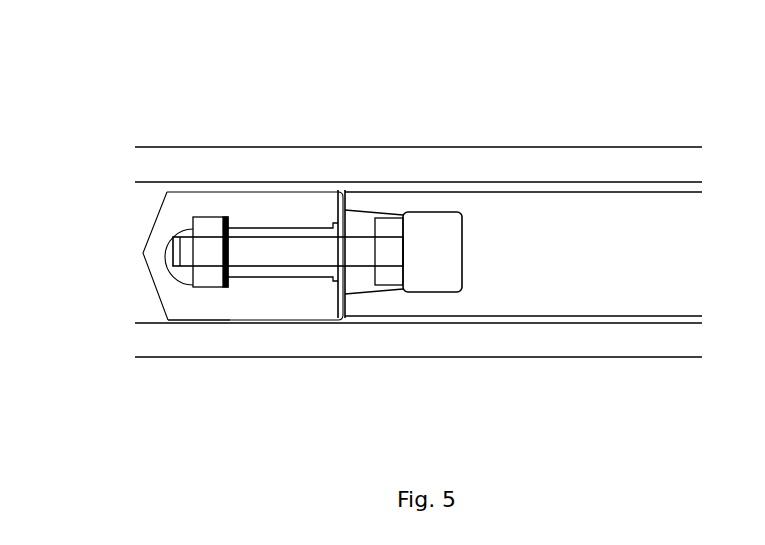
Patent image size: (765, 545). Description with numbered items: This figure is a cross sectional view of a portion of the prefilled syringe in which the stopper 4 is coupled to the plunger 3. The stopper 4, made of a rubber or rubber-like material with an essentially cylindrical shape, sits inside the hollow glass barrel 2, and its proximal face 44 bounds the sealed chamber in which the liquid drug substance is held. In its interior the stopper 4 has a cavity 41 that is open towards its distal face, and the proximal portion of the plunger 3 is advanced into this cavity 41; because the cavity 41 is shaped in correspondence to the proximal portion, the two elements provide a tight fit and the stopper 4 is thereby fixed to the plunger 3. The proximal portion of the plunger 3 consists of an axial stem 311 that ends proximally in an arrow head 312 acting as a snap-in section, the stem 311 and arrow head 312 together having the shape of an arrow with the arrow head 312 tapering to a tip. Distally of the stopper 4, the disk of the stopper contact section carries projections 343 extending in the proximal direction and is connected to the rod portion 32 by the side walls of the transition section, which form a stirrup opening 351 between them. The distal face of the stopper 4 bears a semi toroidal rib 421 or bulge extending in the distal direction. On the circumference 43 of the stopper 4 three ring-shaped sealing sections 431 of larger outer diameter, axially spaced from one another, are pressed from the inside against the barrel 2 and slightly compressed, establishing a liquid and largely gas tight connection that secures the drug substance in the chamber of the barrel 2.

The barrel 2 is at (614, 135).
The plunger 3 is at (596, 330).
The rod portion 32 is at (509, 203).
The stopper 4 is at (133, 230).
The proximal face 44 is at (157, 290).
The sealing sections 431 is at (180, 323).
The circumference 43 is at (227, 187).
The arrow head 312 is at (188, 230).
The stem 311 is at (305, 248).
The cavity 41 is at (318, 277).
The semi toroidal rib 421 is at (343, 297).
The projections 343 is at (350, 203).
The stirrup opening 351 is at (433, 178).